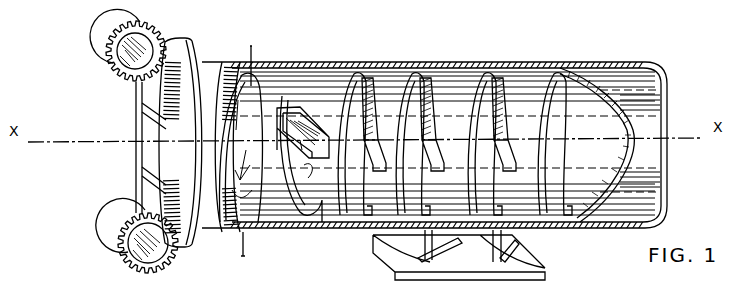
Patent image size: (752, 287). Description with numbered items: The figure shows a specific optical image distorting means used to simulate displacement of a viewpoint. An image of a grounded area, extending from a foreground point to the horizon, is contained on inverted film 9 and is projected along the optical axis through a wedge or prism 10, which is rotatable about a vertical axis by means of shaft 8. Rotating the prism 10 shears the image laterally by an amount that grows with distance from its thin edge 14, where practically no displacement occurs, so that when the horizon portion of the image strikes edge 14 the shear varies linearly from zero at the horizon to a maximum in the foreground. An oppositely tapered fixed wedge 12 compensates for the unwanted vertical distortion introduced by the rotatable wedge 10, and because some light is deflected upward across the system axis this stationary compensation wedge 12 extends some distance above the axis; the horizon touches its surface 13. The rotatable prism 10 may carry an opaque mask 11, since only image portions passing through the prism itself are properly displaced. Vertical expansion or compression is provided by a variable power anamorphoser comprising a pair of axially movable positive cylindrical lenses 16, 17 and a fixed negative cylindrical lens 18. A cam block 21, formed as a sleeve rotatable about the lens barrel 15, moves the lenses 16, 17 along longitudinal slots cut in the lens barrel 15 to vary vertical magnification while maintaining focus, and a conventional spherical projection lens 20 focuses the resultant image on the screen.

The shaft 8 is at (241, 252).
The inverted film 9 is at (142, 135).
The wedge or prism 10 is at (217, 220).
The opaque mask 11 is at (243, 88).
The fixed wedge 12 is at (307, 112).
The surface 13 is at (323, 222).
The edge 14 is at (262, 214).
The lens barrel 15 is at (276, 63).
The positive cylindrical lens 16 is at (428, 66).
The positive cylindrical lens 17 is at (497, 66).
The negative cylindrical lens 18 is at (563, 68).
The projection lens 20 is at (366, 73).
The cam block 21 is at (519, 257).